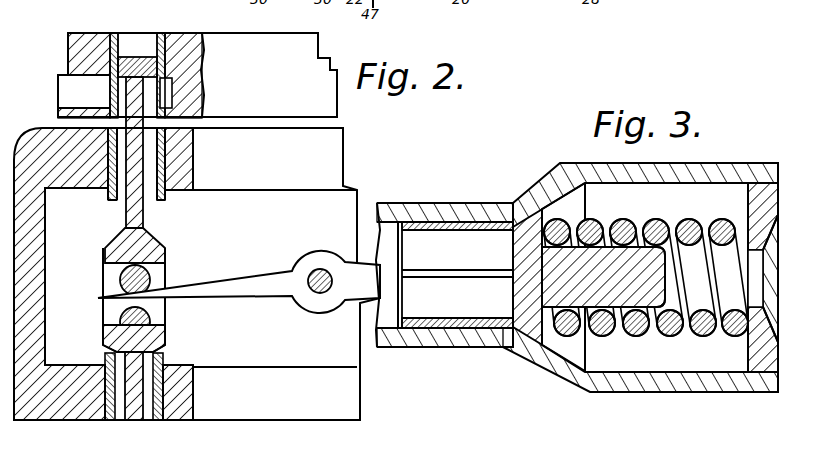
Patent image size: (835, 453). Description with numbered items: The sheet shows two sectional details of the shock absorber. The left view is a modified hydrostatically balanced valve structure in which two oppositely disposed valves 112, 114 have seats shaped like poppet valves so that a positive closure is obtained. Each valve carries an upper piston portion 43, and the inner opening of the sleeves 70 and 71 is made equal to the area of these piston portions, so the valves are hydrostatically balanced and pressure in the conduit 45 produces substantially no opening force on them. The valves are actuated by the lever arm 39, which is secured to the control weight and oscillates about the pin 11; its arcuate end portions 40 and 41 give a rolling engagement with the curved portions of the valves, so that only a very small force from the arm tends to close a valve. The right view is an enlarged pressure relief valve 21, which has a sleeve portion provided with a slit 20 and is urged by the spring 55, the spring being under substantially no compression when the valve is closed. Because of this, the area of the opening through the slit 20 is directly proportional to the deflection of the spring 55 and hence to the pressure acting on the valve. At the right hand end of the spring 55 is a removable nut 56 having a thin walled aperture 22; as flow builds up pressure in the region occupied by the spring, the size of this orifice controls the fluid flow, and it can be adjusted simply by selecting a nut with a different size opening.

In FIG. 2, the pin 11 is at (314, 291).
In FIG. 3, the slit 20 is at (445, 276).
In FIG. 3, the valve 21 is at (641, 247).
In FIG. 3, the aperture 22 is at (748, 255).
In FIG. 2, the arm 39 is at (212, 277).
In FIG. 2, the arcuate end portion 40 is at (112, 285).
In FIG. 2, the arcuate end portion 41 is at (113, 307).
In FIG. 2, the upper piston portion 43 is at (128, 57).
In FIG. 2, the conduit 45 is at (110, 87).
In FIG. 3, the spring 55 is at (677, 336).
In FIG. 3, the nut 56 is at (780, 182).
In FIG. 2, the sleeve 70 is at (167, 198).
In FIG. 2, the sleeve 71 is at (163, 357).
In FIG. 2, the valve 112 is at (123, 230).
In FIG. 2, the valve 114 is at (168, 333).